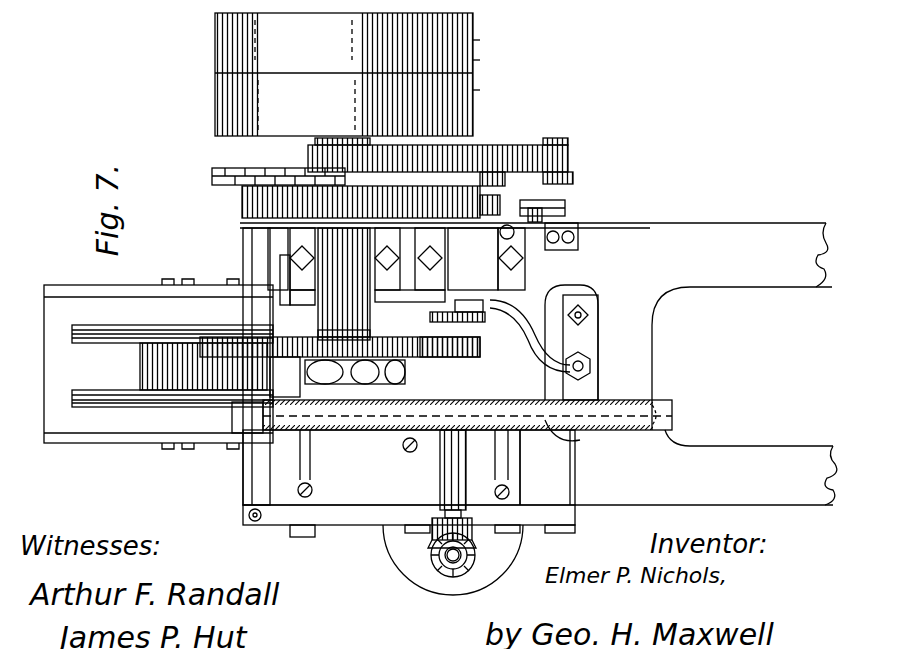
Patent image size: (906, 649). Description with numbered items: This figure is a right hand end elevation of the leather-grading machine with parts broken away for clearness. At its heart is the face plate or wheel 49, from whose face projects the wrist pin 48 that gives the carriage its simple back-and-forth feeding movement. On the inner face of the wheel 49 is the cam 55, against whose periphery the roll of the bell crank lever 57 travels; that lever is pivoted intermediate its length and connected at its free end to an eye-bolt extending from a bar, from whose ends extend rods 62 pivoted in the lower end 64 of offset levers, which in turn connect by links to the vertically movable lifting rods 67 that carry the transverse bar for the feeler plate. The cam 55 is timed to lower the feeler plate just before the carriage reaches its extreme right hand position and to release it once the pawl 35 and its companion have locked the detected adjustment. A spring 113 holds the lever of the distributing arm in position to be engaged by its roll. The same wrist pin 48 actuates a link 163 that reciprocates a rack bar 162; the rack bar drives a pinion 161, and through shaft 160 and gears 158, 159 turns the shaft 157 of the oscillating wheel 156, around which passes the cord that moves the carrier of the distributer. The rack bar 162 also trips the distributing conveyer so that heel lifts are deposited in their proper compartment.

The pawl 35 is at (400, 68).
The lifting rod 67 is at (491, 20).
The lower end of offset lever 64 is at (502, 30).
The rod 62 is at (514, 45).
The wrist pin 48 is at (317, 373).
The cam 55 is at (400, 325).
The spring 113 is at (512, 236).
The bell crank lever 57 is at (513, 344).
The face plate or wheel 49 is at (440, 362).
The link 163 is at (393, 393).
The shaft 160 is at (443, 503).
The pinion 161 is at (475, 425).
The rack bar 162 is at (555, 430).
The oscillating wheel 156 is at (400, 604).
The shaft of oscillating wheel 157 is at (438, 557).
The gear 158 is at (453, 578).
The gear 159 is at (468, 545).